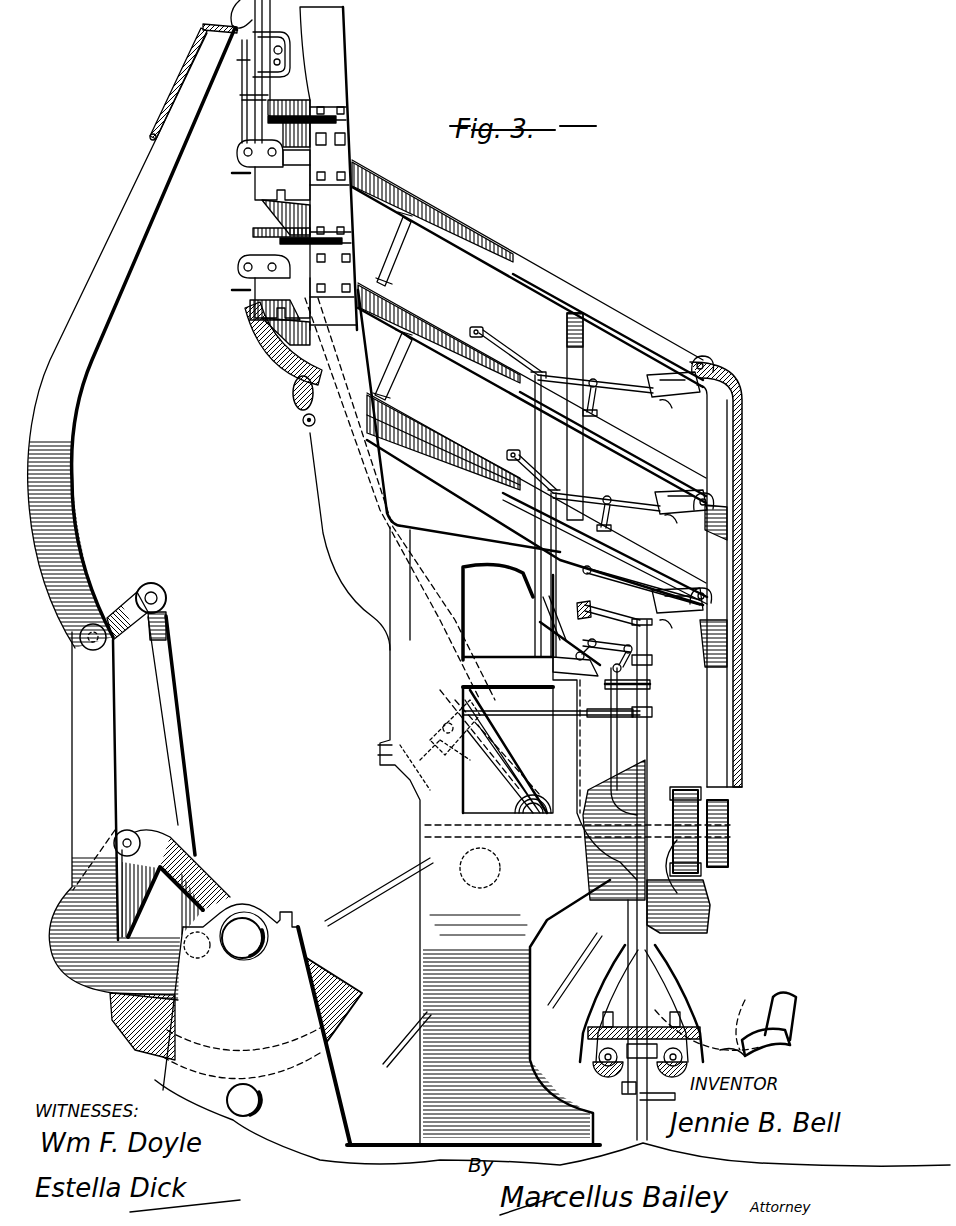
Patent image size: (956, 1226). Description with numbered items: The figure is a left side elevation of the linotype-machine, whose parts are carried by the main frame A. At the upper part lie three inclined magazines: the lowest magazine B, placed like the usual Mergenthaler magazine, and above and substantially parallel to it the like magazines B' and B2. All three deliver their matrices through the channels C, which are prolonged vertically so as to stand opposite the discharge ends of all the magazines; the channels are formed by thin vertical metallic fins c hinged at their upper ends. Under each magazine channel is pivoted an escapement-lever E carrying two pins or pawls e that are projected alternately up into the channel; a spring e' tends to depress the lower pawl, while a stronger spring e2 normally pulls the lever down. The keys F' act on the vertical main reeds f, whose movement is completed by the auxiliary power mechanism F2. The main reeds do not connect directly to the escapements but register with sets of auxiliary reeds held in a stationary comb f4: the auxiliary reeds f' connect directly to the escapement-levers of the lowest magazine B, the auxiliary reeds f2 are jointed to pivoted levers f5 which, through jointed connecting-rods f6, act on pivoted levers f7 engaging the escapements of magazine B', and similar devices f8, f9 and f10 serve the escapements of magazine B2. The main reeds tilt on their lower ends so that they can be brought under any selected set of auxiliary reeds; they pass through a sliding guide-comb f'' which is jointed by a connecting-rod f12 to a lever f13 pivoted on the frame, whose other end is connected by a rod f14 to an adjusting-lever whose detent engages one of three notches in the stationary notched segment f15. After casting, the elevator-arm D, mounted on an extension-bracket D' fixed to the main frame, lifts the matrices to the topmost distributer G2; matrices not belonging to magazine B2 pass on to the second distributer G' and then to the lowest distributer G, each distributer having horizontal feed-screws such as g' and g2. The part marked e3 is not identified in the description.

The main frame A is at (326, 540).
The magazine B is at (537, 498).
The middle magazine B' is at (532, 393).
The topmost magazine B2 is at (480, 248).
The channels C is at (750, 570).
The fins c is at (718, 450).
The elevator-arm D is at (132, 439).
The extension-bracket D' is at (131, 816).
The escapement-lever E is at (666, 519).
The pins or pawls e is at (687, 483).
The spring e' is at (589, 467).
The stronger spring e2 is at (487, 345).
The pivot block e3 is at (588, 620).
The lowest distributer G is at (249, 311).
The second distributer G' is at (255, 168).
The topmost distributer G2 is at (240, 83).
The feed-screw g' is at (295, 160).
The feed-screw g2 is at (242, 148).
The main reeds f is at (678, 880).
The auxiliary reeds f' is at (658, 644).
The guide-comb f'' is at (649, 741).
The auxiliary reeds f2 is at (650, 678).
The stationary comb f4 is at (653, 701).
The pivoted levers f5 is at (608, 638).
The connecting-rods f6 is at (540, 590).
The pivoted levers f7 is at (563, 493).
The connecting device f8 is at (553, 658).
The connecting device f9 is at (536, 424).
The connecting device f10 is at (553, 375).
The connecting-rod f12 is at (543, 713).
The lever f13 is at (453, 723).
The rod f14 is at (557, 990).
The notched segment f15 is at (775, 1000).
The auxiliary power mechanism F2 is at (655, 1007).
The keys F' is at (768, 1044).